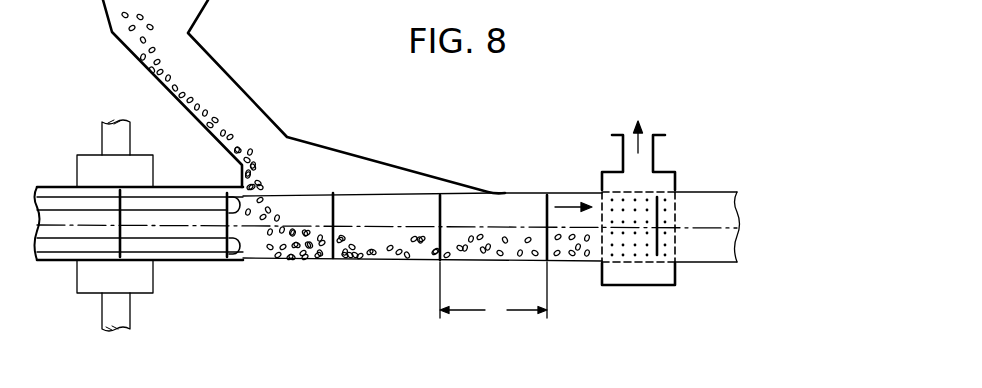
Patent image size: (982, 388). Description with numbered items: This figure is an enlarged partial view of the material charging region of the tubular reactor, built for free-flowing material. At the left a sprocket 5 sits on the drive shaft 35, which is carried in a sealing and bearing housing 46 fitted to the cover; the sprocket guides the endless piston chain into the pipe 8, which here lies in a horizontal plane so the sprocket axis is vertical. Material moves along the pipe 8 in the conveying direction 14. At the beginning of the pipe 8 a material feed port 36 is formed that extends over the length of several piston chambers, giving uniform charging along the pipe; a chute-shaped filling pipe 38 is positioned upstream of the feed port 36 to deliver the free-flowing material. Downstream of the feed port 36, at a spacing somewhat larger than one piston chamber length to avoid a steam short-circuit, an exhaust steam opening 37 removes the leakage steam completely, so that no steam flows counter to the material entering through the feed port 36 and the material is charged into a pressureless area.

The sprocket 5 is at (193, 203).
The upper pipe 8 is at (707, 267).
The conveying direction 14 is at (567, 203).
The drive shaft 35 is at (113, 313).
The material feed port 36 is at (367, 193).
The exhaust steam opening 37 is at (670, 187).
The filling pipe 38 is at (245, 92).
The sealing and bearing housing 46 is at (143, 280).